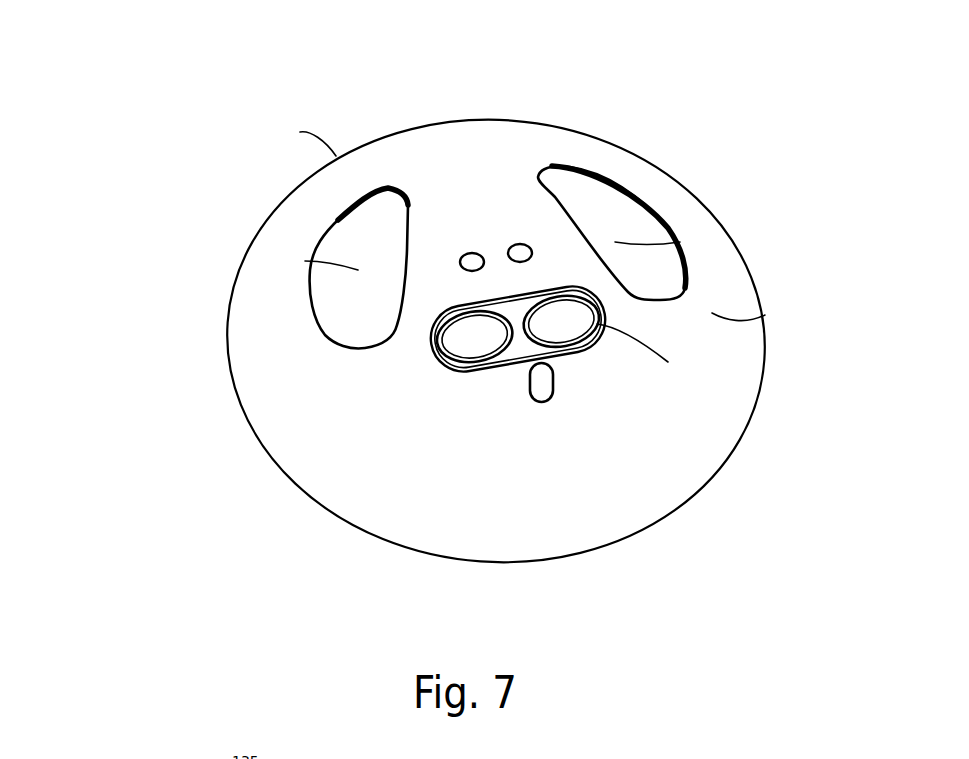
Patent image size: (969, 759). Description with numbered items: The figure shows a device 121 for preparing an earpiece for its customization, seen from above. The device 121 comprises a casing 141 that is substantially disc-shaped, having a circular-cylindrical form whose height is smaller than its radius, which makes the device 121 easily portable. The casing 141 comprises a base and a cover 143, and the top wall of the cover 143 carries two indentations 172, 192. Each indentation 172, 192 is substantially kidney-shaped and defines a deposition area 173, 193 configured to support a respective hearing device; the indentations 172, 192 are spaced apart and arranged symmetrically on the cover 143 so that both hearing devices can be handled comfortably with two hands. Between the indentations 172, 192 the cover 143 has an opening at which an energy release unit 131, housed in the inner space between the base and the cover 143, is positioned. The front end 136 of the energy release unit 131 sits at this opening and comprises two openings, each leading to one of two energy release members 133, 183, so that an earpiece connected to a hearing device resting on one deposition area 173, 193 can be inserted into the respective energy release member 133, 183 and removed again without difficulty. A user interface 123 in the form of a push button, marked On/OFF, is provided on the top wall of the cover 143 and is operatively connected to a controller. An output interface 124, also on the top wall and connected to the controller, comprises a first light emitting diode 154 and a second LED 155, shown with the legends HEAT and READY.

The device 121 is at (119, 124).
The casing 141 is at (300, 132).
The cover 143 is at (765, 315).
The indentation 172 is at (365, 232).
The deposition area 173 is at (305, 261).
The indentation 192 is at (615, 220).
The deposition area 193 is at (680, 242).
The output interface 124 is at (469, 258).
The first light emitting diode 154 is at (476, 258).
The second LED 155 is at (520, 250).
The energy release member 133 is at (440, 337).
The energy release unit 131 is at (510, 353).
The front end 136 is at (518, 354).
The user interface 123 is at (545, 385).
The energy release member 183 is at (668, 362).